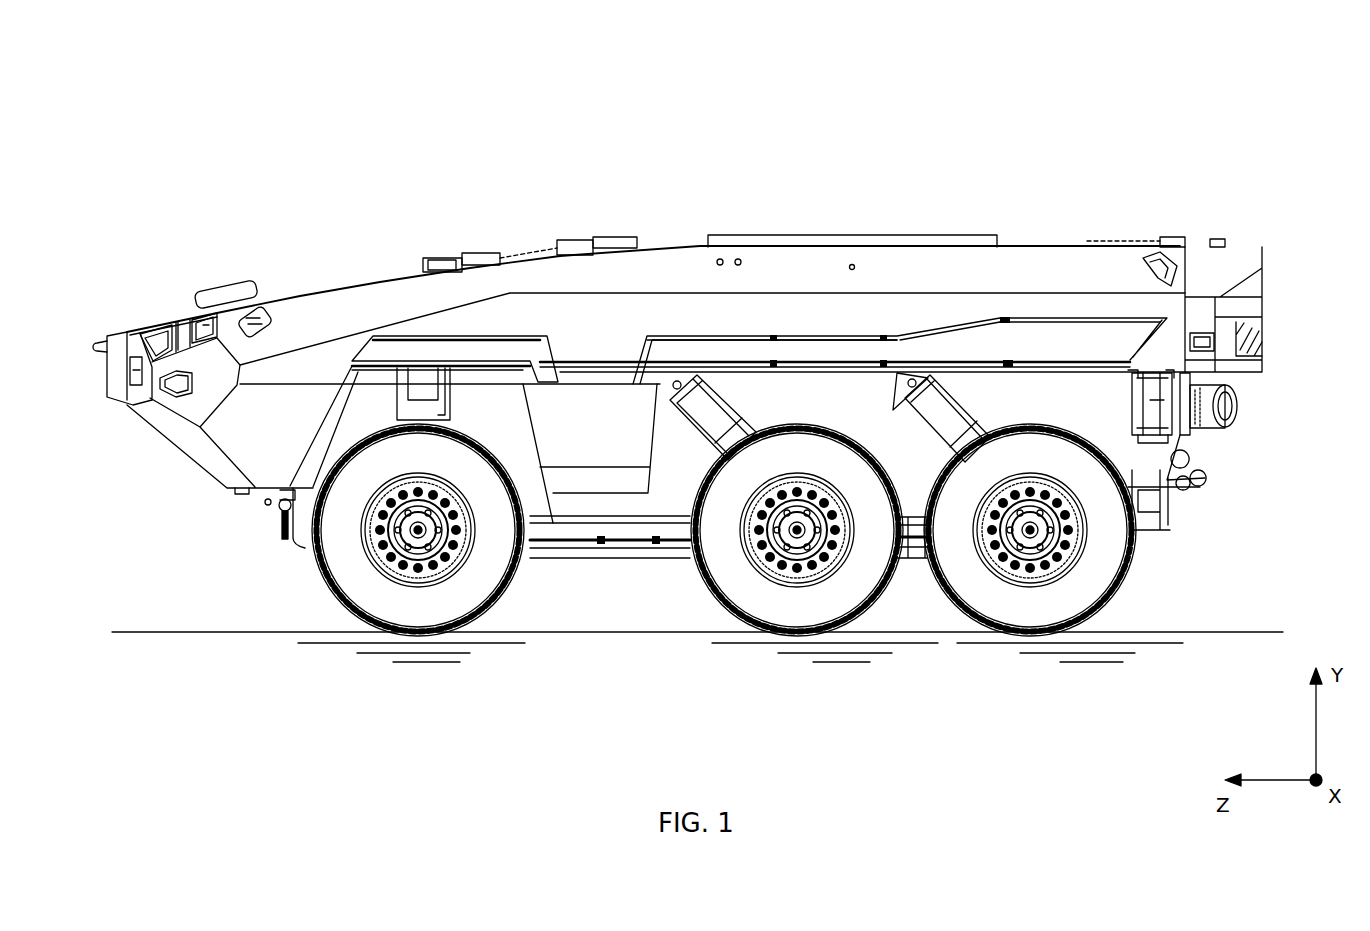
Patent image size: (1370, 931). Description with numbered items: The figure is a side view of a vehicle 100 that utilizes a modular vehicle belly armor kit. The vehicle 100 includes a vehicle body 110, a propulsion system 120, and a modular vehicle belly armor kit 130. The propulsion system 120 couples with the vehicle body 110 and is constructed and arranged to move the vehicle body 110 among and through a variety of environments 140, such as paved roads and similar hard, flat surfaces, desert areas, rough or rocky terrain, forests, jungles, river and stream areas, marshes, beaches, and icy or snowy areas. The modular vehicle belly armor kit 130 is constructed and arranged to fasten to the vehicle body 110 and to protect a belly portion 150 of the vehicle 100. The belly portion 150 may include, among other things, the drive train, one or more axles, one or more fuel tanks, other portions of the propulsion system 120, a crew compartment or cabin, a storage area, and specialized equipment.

The vehicle 100 is at (171, 81).
The vehicle body 110 is at (683, 258).
The propulsion system 120 is at (1222, 532).
The modular vehicle belly armor kit 130 is at (664, 565).
The environments 140 is at (965, 681).
The belly portion 150 is at (611, 581).